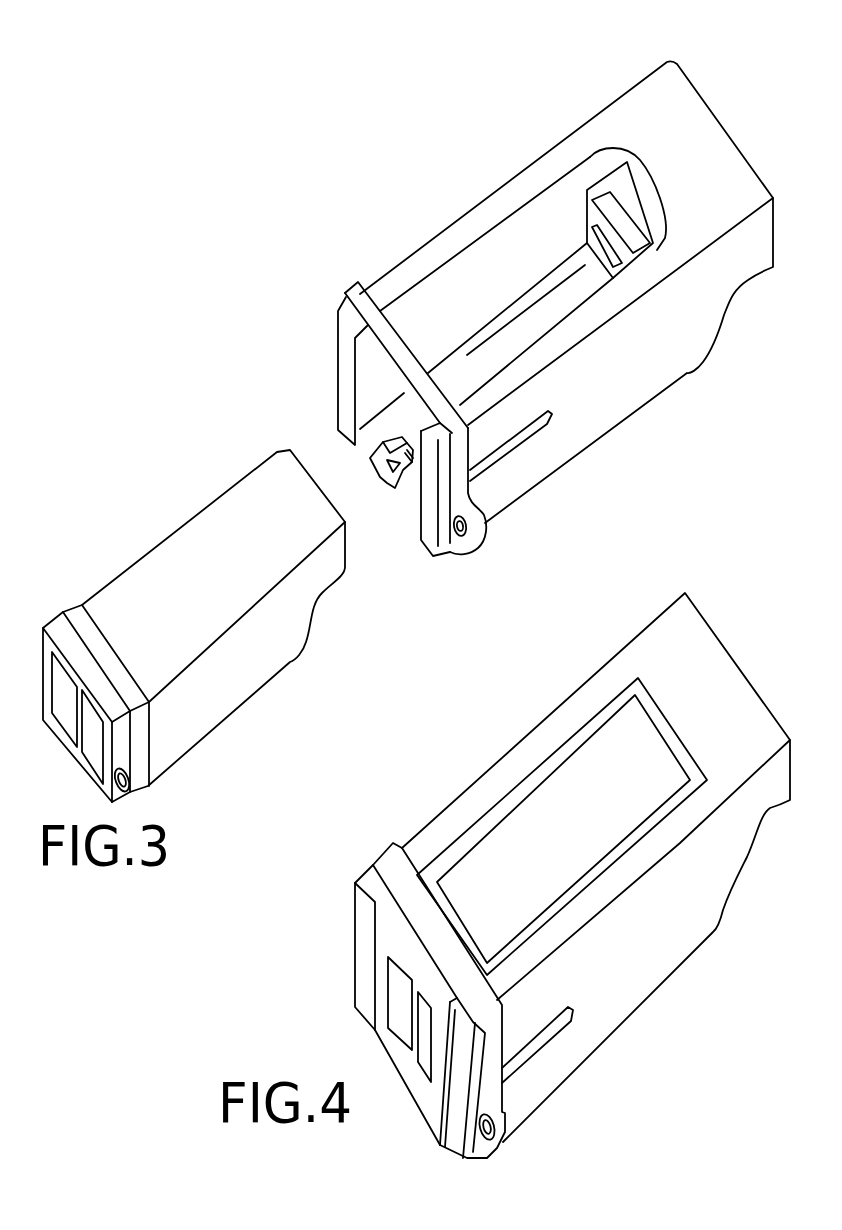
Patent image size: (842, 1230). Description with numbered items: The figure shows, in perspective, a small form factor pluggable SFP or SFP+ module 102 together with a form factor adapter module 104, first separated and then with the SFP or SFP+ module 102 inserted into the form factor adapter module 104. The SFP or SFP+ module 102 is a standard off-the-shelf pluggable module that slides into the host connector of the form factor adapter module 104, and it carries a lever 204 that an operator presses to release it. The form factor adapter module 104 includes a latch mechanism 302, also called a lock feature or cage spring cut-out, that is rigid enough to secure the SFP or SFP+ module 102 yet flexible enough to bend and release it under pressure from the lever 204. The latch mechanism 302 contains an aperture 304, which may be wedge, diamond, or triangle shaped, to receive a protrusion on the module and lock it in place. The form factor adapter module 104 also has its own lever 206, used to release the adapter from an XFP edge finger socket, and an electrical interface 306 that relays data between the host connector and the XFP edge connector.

In FIG. 3, the SFP or SFP+ module 102 is at (182, 481).
In FIG. 3, the form factor adapter module 104 is at (467, 124).
In FIG. 3, the lever 204 is at (107, 653).
In FIG. 4, the lever 204 is at (412, 953).
In FIG. 3, the lever 206 is at (357, 292).
In FIG. 3, the latch mechanism 302 is at (421, 496).
In FIG. 3, the aperture 304 is at (373, 456).
In FIG. 3, the electrical interface 306 is at (638, 213).